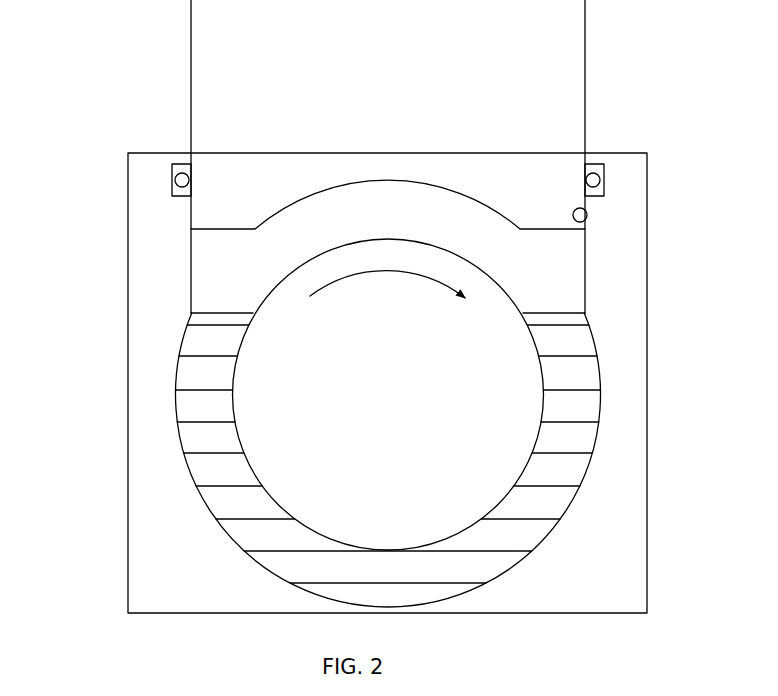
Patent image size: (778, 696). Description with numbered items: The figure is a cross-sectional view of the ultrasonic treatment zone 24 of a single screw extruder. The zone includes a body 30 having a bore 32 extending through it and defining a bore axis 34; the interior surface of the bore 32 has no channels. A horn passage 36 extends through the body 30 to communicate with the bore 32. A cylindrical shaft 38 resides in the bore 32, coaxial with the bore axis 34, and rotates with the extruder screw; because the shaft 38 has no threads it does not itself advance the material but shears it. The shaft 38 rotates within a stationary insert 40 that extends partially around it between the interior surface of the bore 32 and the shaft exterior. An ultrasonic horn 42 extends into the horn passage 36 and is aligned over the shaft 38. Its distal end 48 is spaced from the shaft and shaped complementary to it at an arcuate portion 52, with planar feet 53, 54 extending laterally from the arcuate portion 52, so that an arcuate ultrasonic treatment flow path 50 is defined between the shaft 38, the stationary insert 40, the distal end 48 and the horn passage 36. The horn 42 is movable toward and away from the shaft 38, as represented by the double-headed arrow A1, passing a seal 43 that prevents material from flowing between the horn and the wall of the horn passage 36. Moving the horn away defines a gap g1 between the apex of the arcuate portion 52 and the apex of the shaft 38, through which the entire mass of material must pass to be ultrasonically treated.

The ultrasonic treatment zone 24 is at (116, 104).
The double-headed arrow A1 is at (172, 105).
The ultrasonic horn 42 is at (567, 73).
The seal 43 is at (600, 168).
The planar foot 53 is at (224, 229).
The arcuate portion 52 is at (323, 190).
The distal end 48 is at (462, 200).
The planar foot 54 is at (556, 229).
The horn passage 36 is at (586, 208).
The gap g1 is at (388, 183).
The body 30 is at (623, 282).
The arcuate ultrasonic treatment flow path 50 is at (262, 252).
The cylindrical shaft 38 is at (513, 362).
The stationary insert 40 is at (578, 403).
The bore axis 34 is at (387, 393).
The bore 32 is at (598, 444).